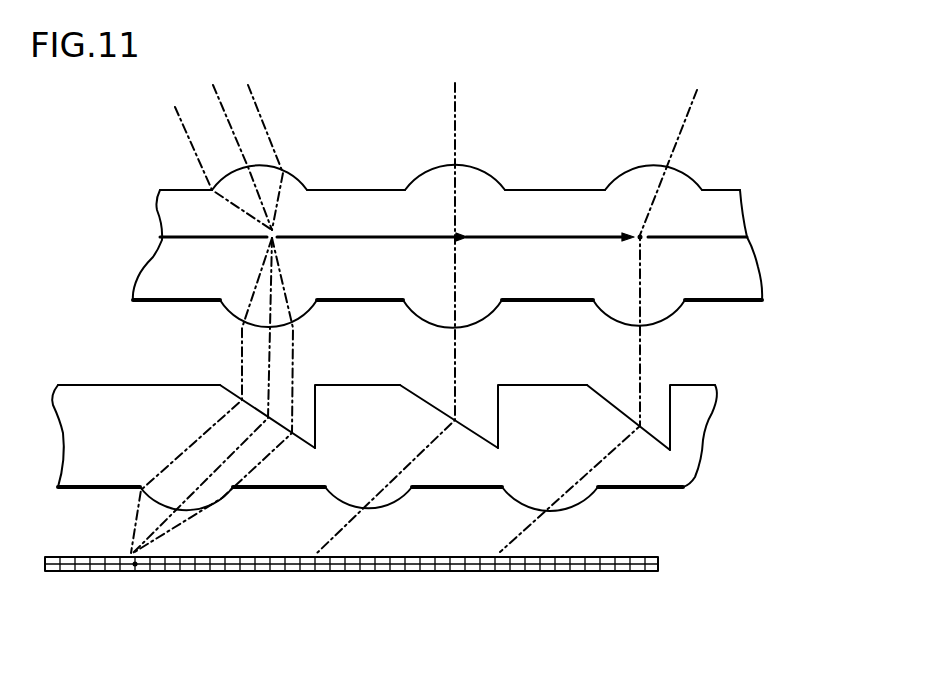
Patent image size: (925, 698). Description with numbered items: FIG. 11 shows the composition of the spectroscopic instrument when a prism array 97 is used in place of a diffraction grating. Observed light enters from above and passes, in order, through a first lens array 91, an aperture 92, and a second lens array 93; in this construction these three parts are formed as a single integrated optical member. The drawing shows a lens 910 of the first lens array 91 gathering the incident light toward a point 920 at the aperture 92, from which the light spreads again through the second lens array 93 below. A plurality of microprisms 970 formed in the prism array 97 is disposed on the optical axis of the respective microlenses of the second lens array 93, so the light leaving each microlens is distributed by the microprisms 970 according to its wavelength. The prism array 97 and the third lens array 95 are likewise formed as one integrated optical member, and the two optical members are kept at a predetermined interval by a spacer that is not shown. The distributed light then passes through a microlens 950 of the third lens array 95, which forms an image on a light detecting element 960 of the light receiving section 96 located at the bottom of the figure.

The first lens array 91 is at (470, 203).
The lens 910 is at (301, 151).
The aperture 92 is at (514, 214).
The light emitting point 920 is at (607, 157).
The second lens array 93 is at (506, 302).
The prism array 97 is at (753, 385).
The microprisms 970 is at (445, 390).
The third lens array 95 is at (753, 460).
The microlens 950 is at (603, 511).
The light receiving section 96 is at (417, 570).
The light detecting element 960 is at (184, 614).